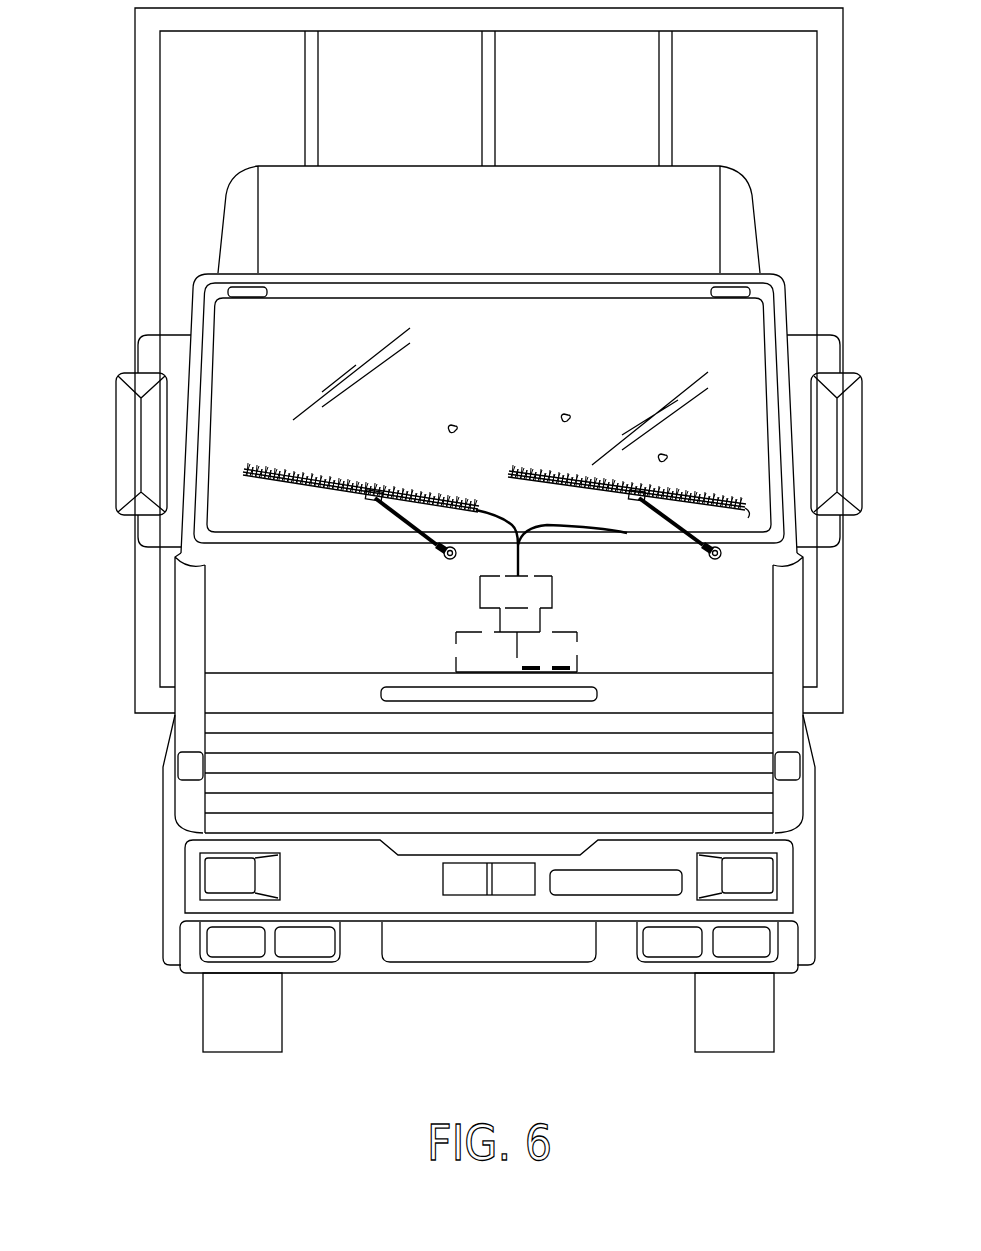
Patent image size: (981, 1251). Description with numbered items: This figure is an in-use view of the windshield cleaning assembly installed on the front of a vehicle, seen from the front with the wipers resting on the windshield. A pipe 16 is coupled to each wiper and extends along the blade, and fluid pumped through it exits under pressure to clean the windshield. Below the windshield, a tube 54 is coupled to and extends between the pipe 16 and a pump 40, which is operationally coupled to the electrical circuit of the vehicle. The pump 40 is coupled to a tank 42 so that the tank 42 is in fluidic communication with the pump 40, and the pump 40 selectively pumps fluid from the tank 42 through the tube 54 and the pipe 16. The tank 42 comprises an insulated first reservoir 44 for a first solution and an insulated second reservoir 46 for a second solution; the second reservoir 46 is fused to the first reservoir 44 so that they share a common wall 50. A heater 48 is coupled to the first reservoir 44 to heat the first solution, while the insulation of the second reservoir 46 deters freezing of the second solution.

The pipe 16 is at (710, 508).
The pump 40 is at (627, 533).
The tank 42 is at (456, 640).
The first reservoir 44 is at (565, 648).
The second reservoir 46 is at (470, 652).
The heater 48 is at (565, 672).
The common wall 50 is at (517, 657).
The tube 54 is at (538, 592).